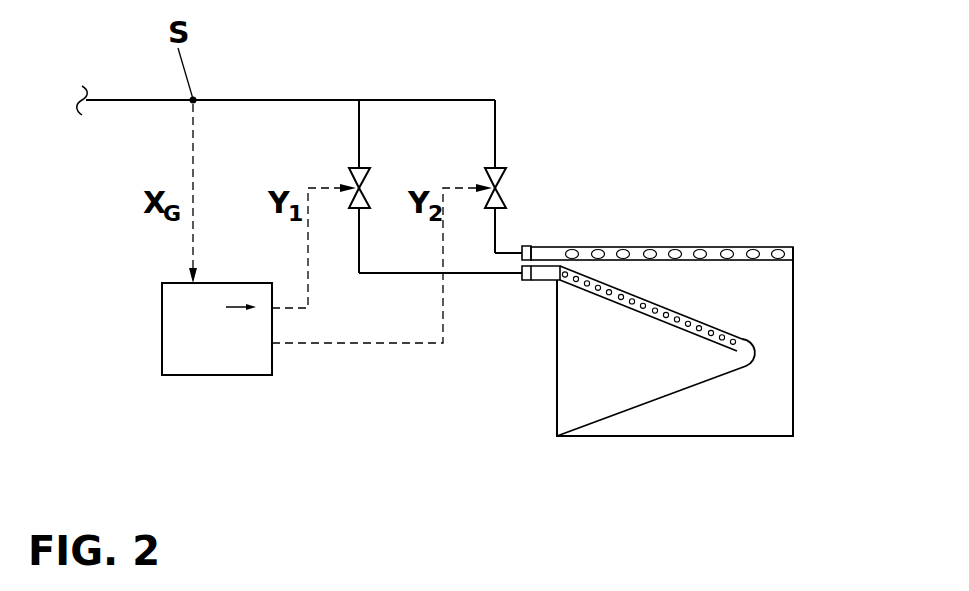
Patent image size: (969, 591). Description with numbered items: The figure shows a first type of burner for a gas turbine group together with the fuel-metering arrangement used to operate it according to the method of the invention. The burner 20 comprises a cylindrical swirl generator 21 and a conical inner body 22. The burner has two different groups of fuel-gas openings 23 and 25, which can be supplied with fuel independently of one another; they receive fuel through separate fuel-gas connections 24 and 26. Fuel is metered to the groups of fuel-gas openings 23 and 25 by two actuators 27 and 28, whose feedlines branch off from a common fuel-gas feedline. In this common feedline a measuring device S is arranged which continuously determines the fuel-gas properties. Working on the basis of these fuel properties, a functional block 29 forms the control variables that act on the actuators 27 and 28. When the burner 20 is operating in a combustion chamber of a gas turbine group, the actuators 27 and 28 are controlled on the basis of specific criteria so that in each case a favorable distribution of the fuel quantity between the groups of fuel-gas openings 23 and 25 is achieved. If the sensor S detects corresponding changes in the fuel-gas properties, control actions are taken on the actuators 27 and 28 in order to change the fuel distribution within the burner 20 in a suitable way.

The burner 20 is at (758, 313).
The cylindrical swirl generator 21 is at (793, 418).
The conical inner body 22 is at (702, 380).
The first group of fuel-gas openings 23 is at (718, 247).
The first fuel-gas connection 24 is at (541, 246).
The second group of fuel-gas openings 25 is at (665, 318).
The second fuel-gas connection 26 is at (527, 281).
The first actuator 27 is at (490, 174).
The second actuator 28 is at (354, 174).
The functional block 29 is at (193, 375).